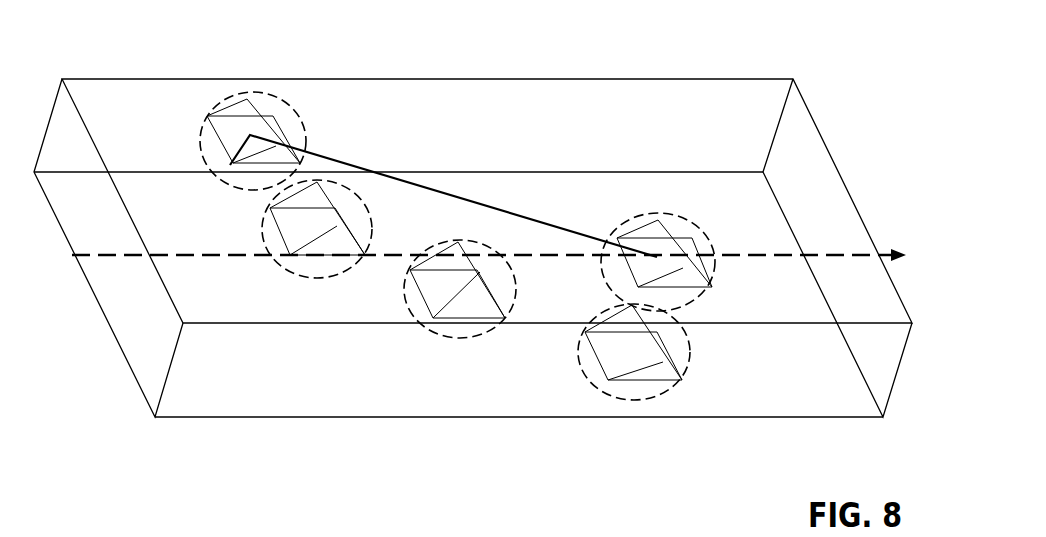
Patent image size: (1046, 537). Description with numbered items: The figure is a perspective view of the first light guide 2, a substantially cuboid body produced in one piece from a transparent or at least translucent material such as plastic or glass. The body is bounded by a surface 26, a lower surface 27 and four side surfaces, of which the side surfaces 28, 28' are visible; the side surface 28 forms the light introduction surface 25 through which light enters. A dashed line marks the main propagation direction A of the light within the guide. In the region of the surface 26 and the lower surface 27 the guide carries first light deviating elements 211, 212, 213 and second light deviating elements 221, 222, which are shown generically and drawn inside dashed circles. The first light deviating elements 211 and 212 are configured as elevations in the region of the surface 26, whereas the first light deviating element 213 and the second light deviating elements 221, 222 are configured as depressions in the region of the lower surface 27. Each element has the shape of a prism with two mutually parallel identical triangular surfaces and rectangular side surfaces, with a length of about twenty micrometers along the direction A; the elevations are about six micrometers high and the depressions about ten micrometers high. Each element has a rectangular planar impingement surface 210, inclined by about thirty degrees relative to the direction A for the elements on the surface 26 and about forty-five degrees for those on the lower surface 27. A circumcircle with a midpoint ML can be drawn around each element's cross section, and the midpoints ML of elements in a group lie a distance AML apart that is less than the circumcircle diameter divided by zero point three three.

The first light guide 2 is at (459, 253).
The light introduction surface 25 is at (93, 238).
The surface 26 is at (580, 97).
The lower surface 27 is at (395, 417).
The side surface 28 is at (95, 248).
The side surface 28' is at (837, 248).
The planar impingement surface 210 is at (231, 130).
The first light deviating element 211 is at (275, 128).
The first light deviating element 212 is at (670, 267).
The first light deviating element 213 is at (465, 305).
The second light deviating element 221 is at (297, 218).
The second light deviating element 222 is at (652, 368).
The midpoint ML is at (230, 165).
The distance AML is at (443, 196).
The main propagation direction A is at (493, 269).